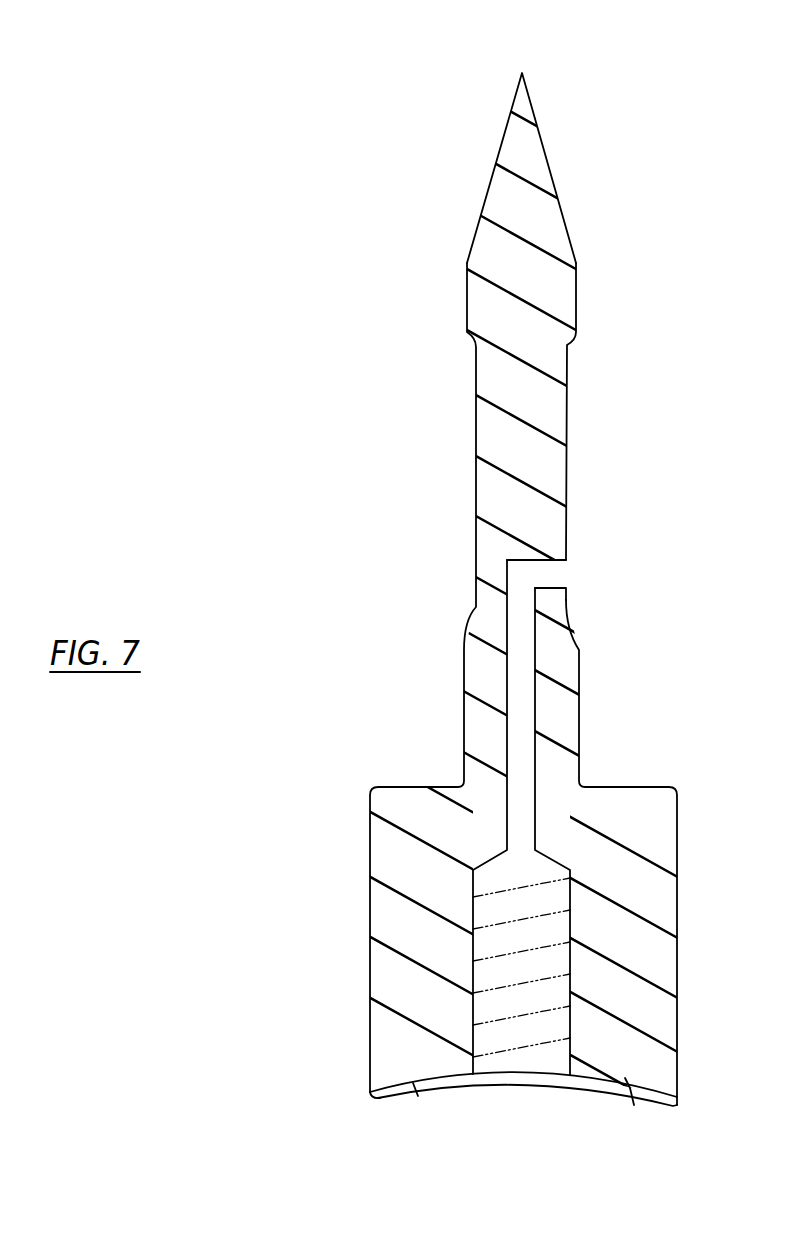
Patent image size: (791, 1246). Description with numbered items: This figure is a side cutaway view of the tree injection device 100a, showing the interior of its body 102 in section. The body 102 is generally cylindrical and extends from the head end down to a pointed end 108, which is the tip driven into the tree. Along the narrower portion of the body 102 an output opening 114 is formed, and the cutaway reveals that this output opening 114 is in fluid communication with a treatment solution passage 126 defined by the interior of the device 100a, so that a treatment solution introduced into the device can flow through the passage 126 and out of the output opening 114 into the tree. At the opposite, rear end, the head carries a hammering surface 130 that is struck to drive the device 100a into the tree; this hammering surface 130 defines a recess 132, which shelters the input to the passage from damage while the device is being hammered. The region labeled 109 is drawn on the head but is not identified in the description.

The tree injection device 100a is at (276, 220).
The body 102 is at (360, 72).
The pointed end 108 is at (529, 48).
The output opening 114 is at (588, 567).
The treatment solution passage 126 is at (528, 911).
The hammering surface 130 is at (398, 1119).
The recess 132 is at (596, 1112).
The chamfer 109 is at (652, 1104).